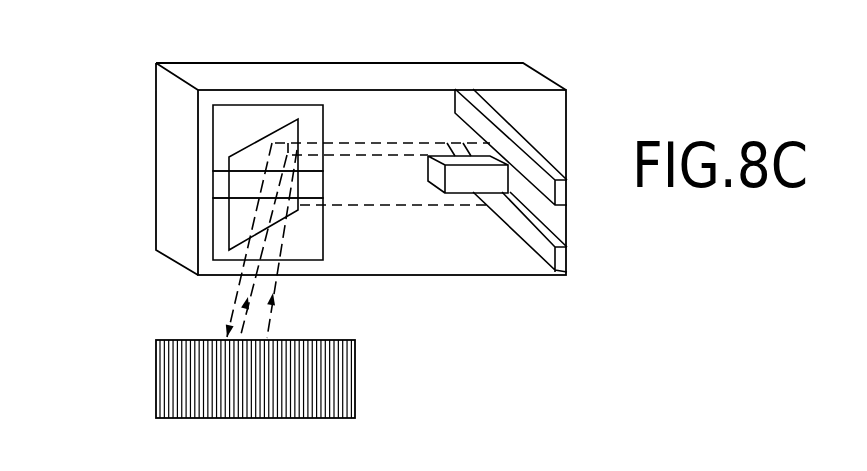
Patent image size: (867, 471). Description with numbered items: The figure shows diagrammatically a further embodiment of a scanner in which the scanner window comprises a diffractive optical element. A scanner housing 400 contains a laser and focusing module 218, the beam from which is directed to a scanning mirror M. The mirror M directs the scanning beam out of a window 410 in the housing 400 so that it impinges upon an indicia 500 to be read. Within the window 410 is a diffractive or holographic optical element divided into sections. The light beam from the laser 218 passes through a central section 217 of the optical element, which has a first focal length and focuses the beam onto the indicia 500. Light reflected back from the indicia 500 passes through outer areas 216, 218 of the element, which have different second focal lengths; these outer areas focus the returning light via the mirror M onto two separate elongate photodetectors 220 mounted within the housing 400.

The scanner housing 400 is at (545, 76).
The window 410 is at (264, 114).
The outer area of diffractive optical element 216 is at (222, 138).
The central section of diffractive optical element 217 is at (222, 182).
The laser and focusing module 218 is at (222, 228).
The elongate photodetector 220 is at (558, 192).
The indicia 500 is at (355, 371).
The scanning mirror M is at (287, 133).